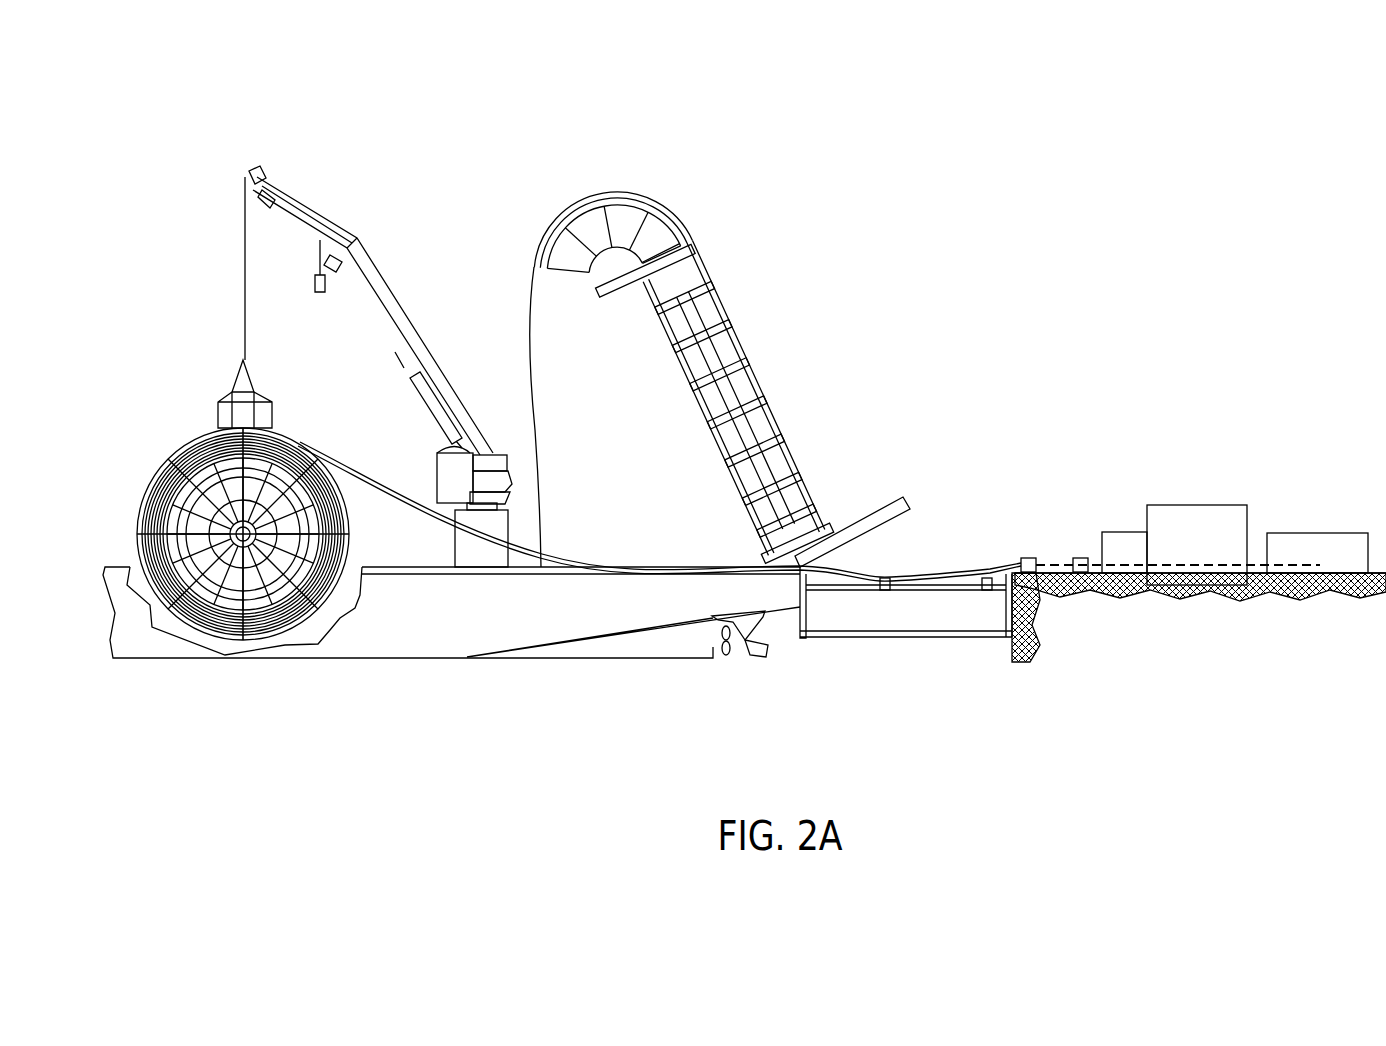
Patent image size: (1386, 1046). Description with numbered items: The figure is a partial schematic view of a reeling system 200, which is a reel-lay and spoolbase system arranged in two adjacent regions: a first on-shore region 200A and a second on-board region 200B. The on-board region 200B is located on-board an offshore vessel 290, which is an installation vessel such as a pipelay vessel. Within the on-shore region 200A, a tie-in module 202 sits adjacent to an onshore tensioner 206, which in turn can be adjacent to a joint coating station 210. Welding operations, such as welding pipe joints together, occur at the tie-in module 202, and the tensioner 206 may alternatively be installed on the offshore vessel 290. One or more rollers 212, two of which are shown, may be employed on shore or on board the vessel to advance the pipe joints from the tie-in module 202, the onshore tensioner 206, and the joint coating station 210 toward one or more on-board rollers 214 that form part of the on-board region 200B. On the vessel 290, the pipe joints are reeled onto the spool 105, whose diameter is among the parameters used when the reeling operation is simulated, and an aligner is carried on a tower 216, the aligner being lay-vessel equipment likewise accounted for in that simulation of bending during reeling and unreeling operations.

The reeling system 200 is at (256, 112).
The spool 105 is at (195, 438).
The tower 216 is at (690, 250).
The on-board rollers 214 is at (986, 592).
The rollers 212 is at (1029, 557).
The joint coating station 210 is at (1120, 532).
The onshore tensioner 206 is at (1193, 505).
The tie-in module 202 is at (1320, 533).
The offshore vessel 290 is at (581, 666).
The on-board region 200B is at (1003, 725).
The on-shore region 200A is at (1012, 725).